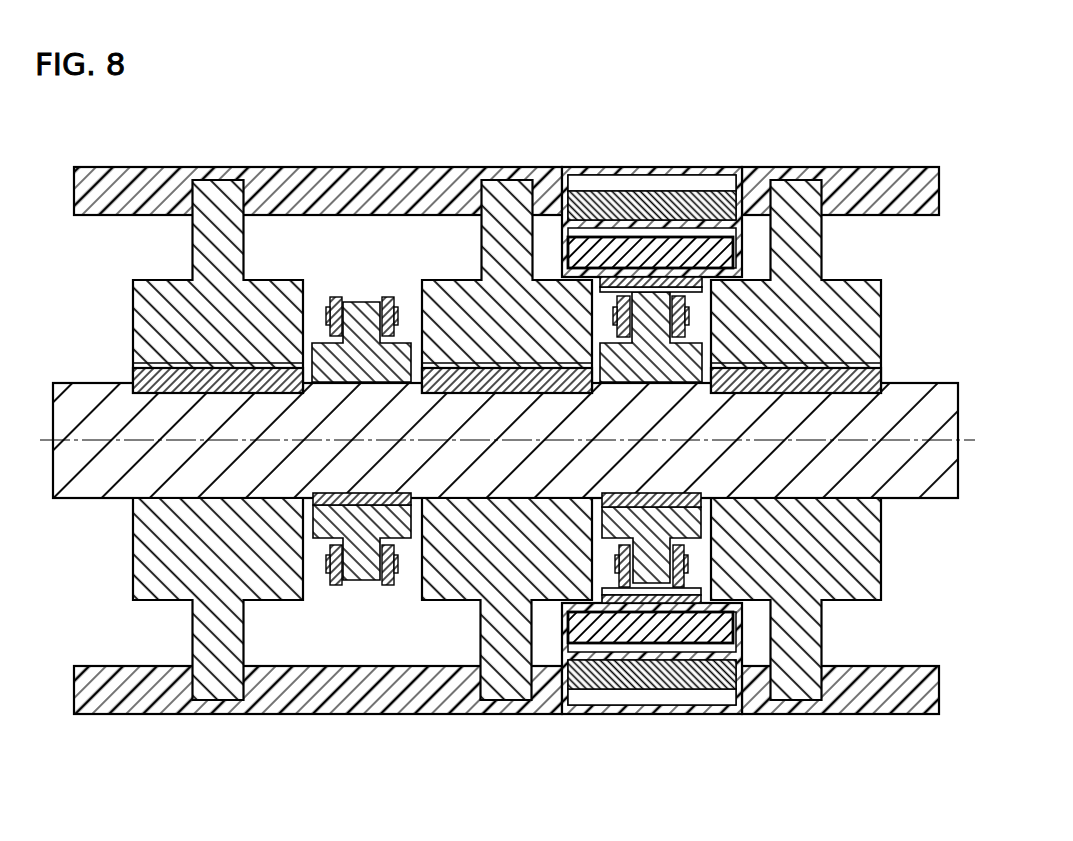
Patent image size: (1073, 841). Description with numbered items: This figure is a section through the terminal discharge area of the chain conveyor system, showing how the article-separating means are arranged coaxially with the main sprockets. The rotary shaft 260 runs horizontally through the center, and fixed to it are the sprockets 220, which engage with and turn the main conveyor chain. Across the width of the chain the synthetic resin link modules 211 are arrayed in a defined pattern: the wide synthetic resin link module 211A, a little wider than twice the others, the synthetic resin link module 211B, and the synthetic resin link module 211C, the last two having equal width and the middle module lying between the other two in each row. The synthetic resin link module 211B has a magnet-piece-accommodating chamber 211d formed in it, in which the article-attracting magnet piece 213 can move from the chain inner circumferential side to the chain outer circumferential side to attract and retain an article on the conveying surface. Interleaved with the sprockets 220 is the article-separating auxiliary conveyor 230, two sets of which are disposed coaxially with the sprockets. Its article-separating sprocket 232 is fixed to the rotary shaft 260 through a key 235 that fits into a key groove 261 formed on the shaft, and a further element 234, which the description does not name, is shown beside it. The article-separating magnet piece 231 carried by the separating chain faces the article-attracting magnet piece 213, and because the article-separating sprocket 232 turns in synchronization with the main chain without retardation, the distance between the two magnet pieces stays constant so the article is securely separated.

The synthetic resin link module 211 is at (862, 82).
The synthetic resin link module 211A is at (426, 167).
The synthetic resin link module 211B is at (602, 167).
The synthetic resin link module 211C is at (820, 167).
The magnet-piece-accommodating chamber 211d is at (668, 182).
The article-attracting magnet piece 213 is at (717, 190).
The sprocket 220 is at (133, 310).
The article-separating auxiliary conveyor 230 is at (46, 512).
The article-separating magnet piece 231 is at (738, 624).
The article-separating sprocket 232 is at (326, 527).
The bolt 234 is at (328, 577).
The key 235 is at (312, 498).
The rotary shaft 260 is at (955, 396).
The key groove 261 is at (701, 490).